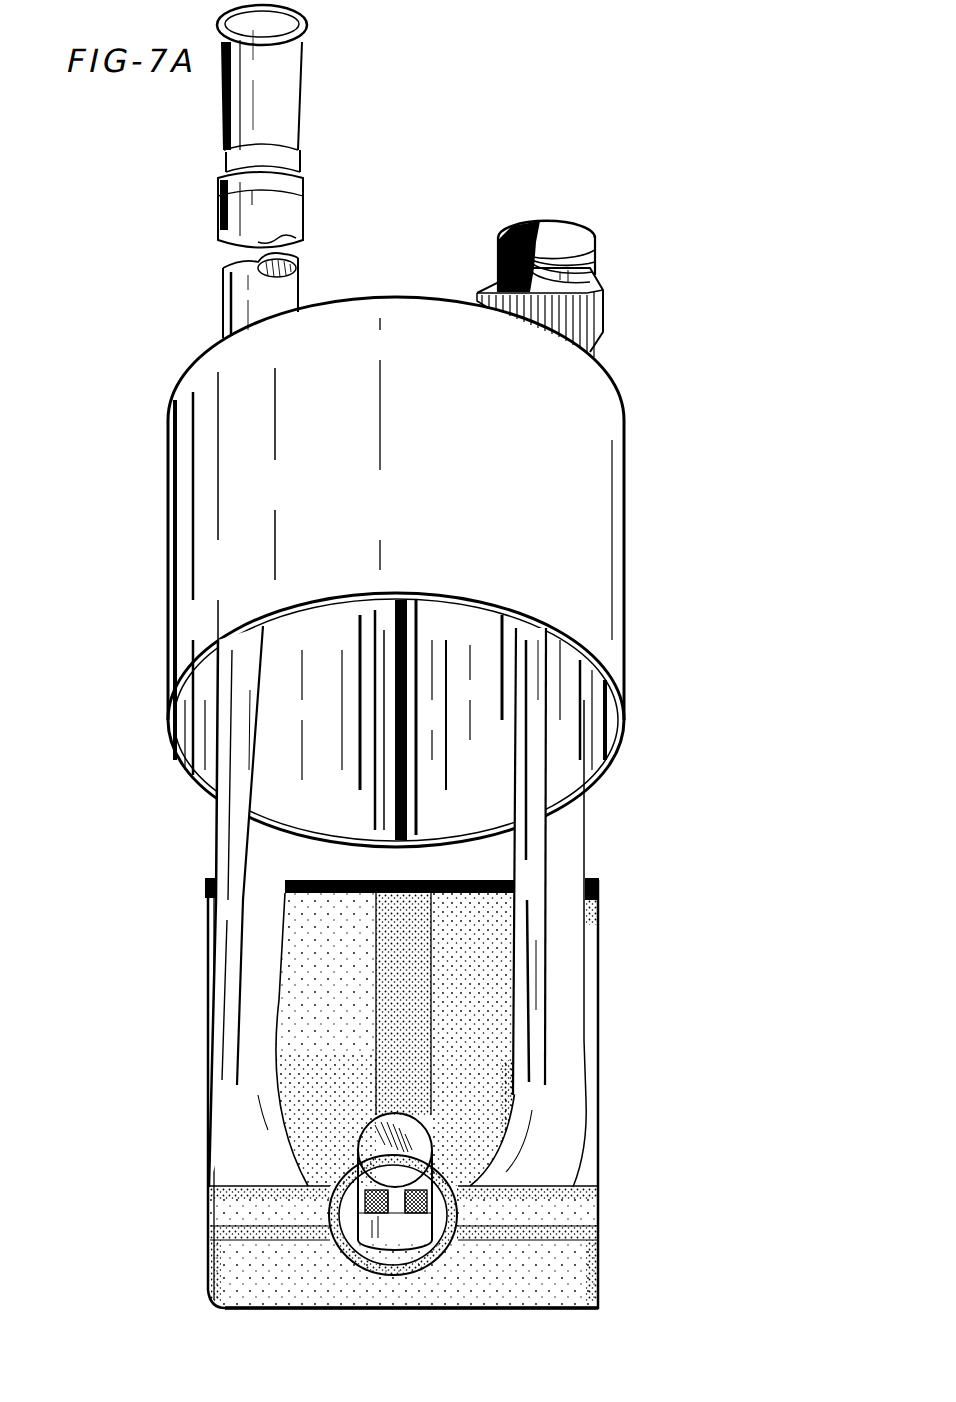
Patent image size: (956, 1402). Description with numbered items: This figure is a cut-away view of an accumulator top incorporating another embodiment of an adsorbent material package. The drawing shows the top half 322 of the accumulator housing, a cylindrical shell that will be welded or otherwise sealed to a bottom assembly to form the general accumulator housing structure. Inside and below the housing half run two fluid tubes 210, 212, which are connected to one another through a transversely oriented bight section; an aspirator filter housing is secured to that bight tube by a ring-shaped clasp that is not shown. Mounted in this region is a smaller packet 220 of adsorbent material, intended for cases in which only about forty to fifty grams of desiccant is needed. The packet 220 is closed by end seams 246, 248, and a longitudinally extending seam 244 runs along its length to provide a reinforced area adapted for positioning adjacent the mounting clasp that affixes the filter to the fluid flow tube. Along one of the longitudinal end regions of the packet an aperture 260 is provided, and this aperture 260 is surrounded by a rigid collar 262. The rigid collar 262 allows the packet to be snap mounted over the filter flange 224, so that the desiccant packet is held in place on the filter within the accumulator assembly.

The top half of the accumulator housing 322 is at (617, 482).
The fluid tube 210 is at (197, 838).
The fluid tube 212 is at (573, 835).
The longitudinally extending seam 244 is at (412, 948).
The end seam 248 is at (598, 890).
The end seam 246 is at (200, 1210).
The filter flange 224 is at (275, 1235).
The packet 220 is at (423, 1096).
The aperture 260 is at (400, 1245).
The rigid collar 262 is at (447, 1268).